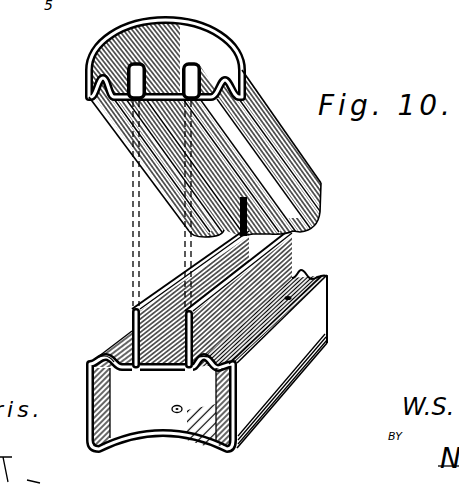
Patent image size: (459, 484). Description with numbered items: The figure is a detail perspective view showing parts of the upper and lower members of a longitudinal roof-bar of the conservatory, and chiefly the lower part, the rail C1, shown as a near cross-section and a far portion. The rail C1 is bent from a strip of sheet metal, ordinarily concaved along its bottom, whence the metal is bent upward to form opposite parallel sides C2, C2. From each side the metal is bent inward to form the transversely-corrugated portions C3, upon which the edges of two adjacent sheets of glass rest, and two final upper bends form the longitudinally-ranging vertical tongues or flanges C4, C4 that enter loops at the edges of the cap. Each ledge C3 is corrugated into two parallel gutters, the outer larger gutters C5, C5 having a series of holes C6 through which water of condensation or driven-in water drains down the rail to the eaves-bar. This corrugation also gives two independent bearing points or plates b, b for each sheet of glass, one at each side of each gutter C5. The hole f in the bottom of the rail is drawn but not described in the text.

The rail C1 is at (218, 234).
The sides C2 is at (87, 89).
The transversely-corrugated portions C3 is at (258, 171).
The vertical tongues or flanges C4 is at (139, 64).
The gutters C5 is at (107, 369).
The holes C6 is at (290, 299).
The bearing points or plates b is at (86, 361).
The opening f is at (172, 415).